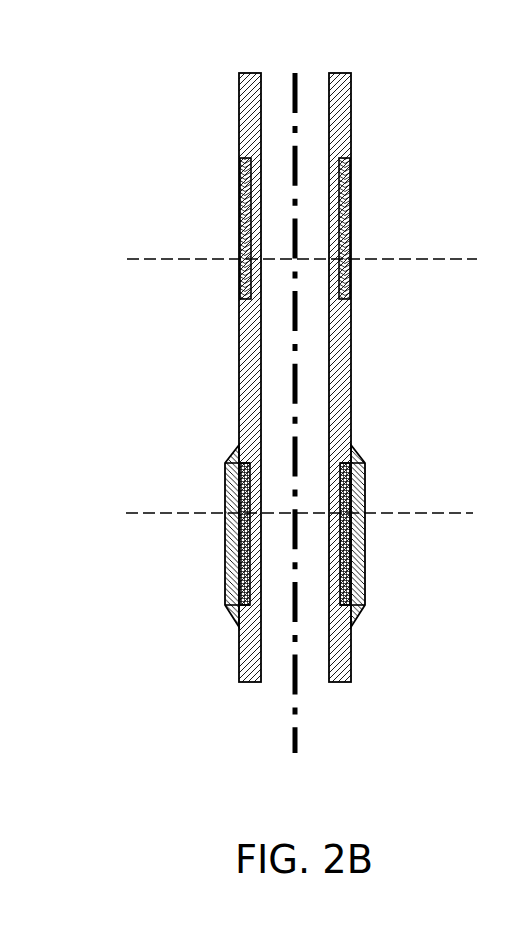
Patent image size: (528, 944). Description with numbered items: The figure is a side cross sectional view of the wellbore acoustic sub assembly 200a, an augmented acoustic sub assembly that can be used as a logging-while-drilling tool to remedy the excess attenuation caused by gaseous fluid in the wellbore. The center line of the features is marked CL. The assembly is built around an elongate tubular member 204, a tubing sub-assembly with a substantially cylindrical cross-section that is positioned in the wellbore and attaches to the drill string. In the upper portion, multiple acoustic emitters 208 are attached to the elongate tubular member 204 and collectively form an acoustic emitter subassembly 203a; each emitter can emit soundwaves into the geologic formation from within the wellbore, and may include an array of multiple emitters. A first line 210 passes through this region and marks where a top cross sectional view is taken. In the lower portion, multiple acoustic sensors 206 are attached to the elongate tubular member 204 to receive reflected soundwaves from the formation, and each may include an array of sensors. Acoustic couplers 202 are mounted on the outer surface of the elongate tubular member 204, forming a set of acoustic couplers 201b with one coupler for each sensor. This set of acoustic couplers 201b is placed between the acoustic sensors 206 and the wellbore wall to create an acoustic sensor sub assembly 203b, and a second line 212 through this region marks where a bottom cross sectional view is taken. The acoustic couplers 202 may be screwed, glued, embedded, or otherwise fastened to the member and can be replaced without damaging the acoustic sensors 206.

The wellbore acoustic sub assembly 200a is at (142, 145).
The acoustic emitter subassembly 203a is at (200, 220).
The acoustic emitters 208 is at (355, 222).
The first line 210 is at (413, 262).
The set of acoustic couplers 201b is at (378, 485).
The second line 212 is at (475, 512).
The acoustic couplers 202 is at (367, 550).
The elongate tubular member 204 is at (240, 392).
The acoustic sensor sub assembly 203b is at (204, 492).
The acoustic sensors 206 is at (238, 532).